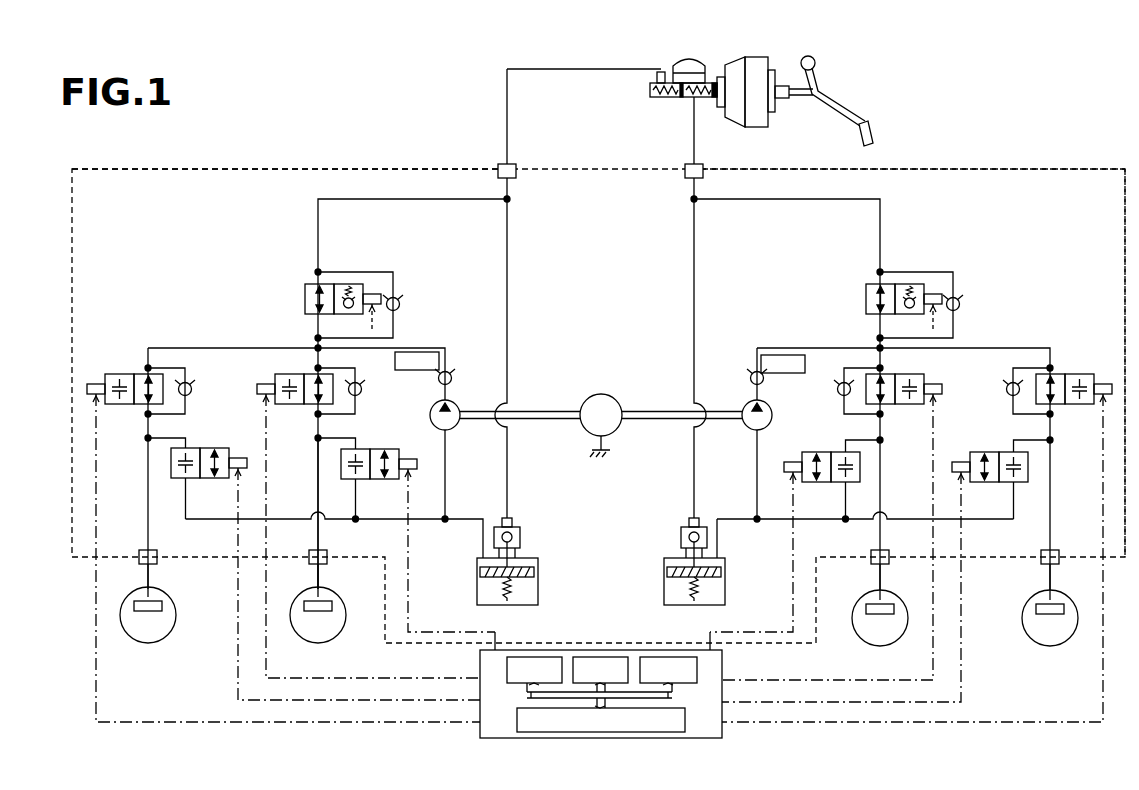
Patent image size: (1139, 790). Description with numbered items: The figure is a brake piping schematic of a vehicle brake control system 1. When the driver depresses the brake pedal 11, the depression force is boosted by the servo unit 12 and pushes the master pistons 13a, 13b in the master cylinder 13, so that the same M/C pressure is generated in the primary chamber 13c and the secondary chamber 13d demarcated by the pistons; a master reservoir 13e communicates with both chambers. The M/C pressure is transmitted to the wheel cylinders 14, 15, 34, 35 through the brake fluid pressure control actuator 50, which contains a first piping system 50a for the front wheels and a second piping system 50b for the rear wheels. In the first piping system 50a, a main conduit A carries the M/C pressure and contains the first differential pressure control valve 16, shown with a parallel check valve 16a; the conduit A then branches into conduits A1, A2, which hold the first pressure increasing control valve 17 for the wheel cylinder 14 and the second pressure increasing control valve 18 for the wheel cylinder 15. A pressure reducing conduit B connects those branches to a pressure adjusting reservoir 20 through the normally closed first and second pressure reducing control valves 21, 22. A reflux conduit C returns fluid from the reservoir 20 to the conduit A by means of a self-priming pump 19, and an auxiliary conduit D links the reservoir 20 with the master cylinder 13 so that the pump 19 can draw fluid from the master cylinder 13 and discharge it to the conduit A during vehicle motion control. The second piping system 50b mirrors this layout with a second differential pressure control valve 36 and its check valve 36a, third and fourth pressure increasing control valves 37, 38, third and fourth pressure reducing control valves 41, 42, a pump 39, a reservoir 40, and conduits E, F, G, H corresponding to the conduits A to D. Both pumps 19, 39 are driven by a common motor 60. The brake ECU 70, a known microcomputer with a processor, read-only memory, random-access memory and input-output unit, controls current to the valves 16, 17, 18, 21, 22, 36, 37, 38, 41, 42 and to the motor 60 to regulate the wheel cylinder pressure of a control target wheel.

The brake control system 1 is at (925, 83).
The brake pedal 11 is at (826, 92).
The servo unit 12 is at (757, 58).
The master cylinder 13 is at (646, 89).
The master piston 13a is at (681, 98).
The master piston 13b is at (722, 100).
The primary chamber 13c is at (656, 98).
The secondary chamber 13d is at (700, 98).
The master reservoir 13e is at (691, 62).
The wheel cylinder 14 is at (134, 602).
The wheel cylinder 15 is at (304, 602).
The first differential pressure control valve 16 is at (305, 298).
The check valve 16a is at (399, 290).
The first pressure increasing control valve 17 is at (140, 374).
The second pressure increasing control valve 18 is at (310, 374).
The self-priming pump 19 is at (430, 415).
The pressure adjusting reservoir 20 is at (475, 596).
The first pressure reducing control valve 21 is at (186, 447).
The second pressure reducing control valve 22 is at (358, 449).
The wheel cylinder 34 is at (1064, 605).
The wheel cylinder 35 is at (894, 605).
The second differential pressure control valve 36 is at (866, 300).
The check valve 36a is at (962, 299).
The third pressure increasing control valve 37 is at (1058, 374).
The fourth pressure increasing control valve 38 is at (888, 374).
The pump 39 is at (772, 415).
The reservoir 40 is at (727, 596).
The third pressure reducing control valve 41 is at (1003, 452).
The fourth pressure reducing control valve 42 is at (832, 452).
The brake fluid pressure control actuator 50 is at (1125, 169).
The first piping system 50a is at (137, 218).
The second piping system 50b is at (1062, 218).
The motor 60 is at (597, 394).
The brake ECU 70 is at (722, 660).
The conduit A is at (330, 206).
The conduit A1 is at (148, 495).
The conduit A2 is at (318, 495).
The conduit B is at (372, 519).
The conduit C is at (414, 348).
The conduit D is at (511, 230).
The conduit E is at (860, 204).
The conduit F is at (830, 519).
The conduit G is at (786, 348).
The conduit H is at (690, 230).